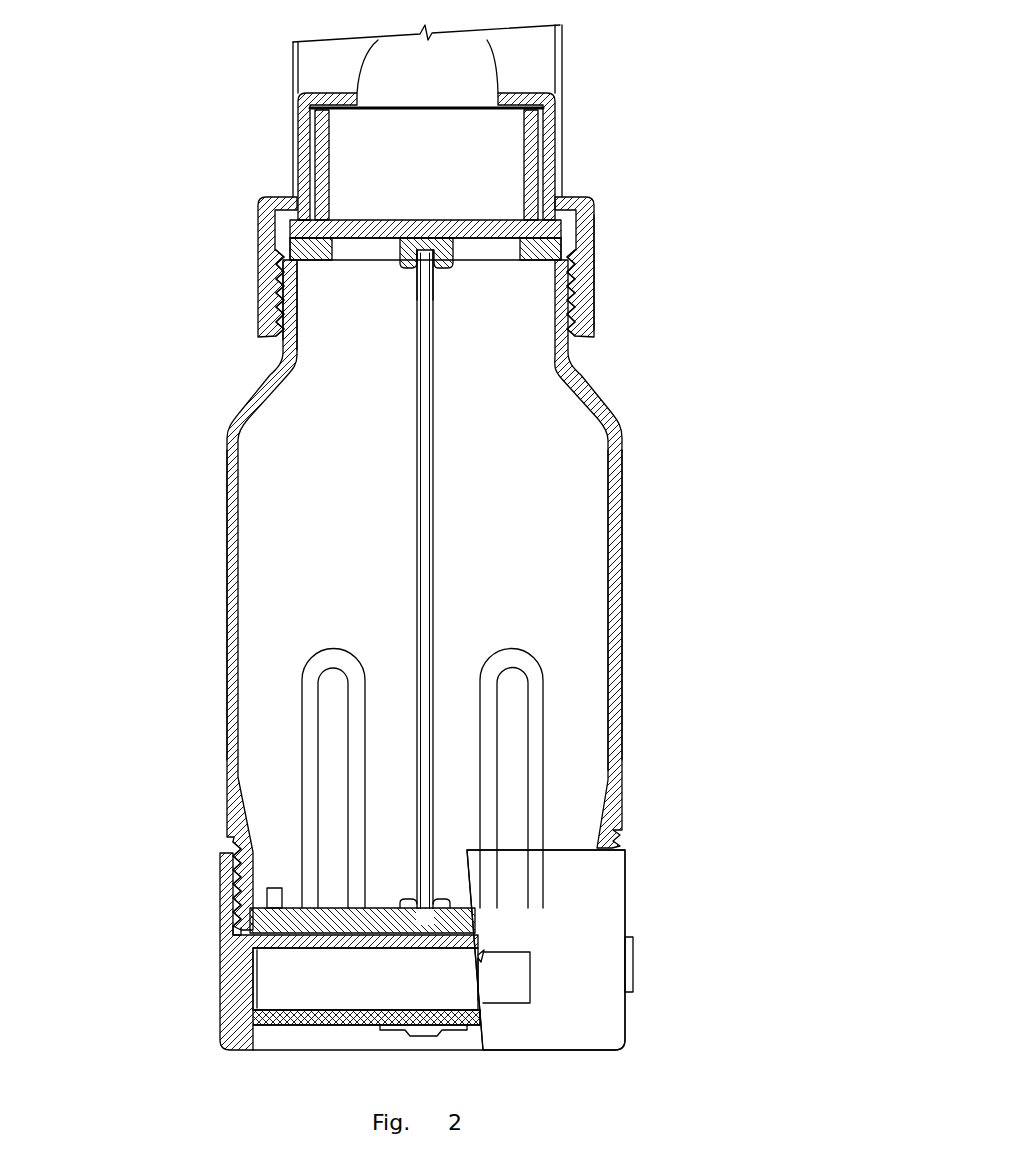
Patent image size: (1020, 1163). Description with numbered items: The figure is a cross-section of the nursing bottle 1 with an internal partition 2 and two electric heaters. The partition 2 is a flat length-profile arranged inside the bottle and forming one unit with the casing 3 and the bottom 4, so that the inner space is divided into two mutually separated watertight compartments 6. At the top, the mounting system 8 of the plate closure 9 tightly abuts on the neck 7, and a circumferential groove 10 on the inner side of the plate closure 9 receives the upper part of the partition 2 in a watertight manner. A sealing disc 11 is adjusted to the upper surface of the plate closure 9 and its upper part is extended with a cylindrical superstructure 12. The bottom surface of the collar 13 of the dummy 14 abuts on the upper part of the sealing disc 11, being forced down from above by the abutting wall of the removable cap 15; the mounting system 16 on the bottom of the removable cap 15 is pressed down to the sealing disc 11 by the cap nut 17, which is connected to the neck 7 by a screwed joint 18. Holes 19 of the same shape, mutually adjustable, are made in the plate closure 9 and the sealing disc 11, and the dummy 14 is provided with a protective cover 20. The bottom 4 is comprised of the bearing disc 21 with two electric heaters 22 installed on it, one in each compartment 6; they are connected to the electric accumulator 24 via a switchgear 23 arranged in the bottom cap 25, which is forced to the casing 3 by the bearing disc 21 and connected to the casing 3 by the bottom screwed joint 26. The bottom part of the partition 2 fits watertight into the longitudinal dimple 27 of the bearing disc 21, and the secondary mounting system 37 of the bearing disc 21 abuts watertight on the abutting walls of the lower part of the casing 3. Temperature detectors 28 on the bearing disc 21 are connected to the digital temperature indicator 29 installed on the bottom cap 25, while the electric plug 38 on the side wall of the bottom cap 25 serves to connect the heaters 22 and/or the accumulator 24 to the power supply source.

The nursing bottle 1 is at (623, 460).
The partition 2 is at (432, 568).
The casing 3 is at (623, 673).
The bottom 4 is at (470, 893).
The compartment 6 is at (275, 508).
The neck 7 is at (260, 230).
The mounting system 8 is at (273, 275).
The plate closure 9 is at (306, 265).
The circumferential groove 10 is at (427, 263).
The sealing disc 11 is at (326, 185).
The cylindrical superstructure 12 is at (320, 153).
The collar 13 is at (332, 112).
The dummy 14 is at (493, 58).
The removable cap 15 is at (550, 135).
The mounting system 16 is at (595, 230).
The cap nut 17 is at (595, 273).
The screwed joint 18 is at (595, 307).
The holes 19 is at (488, 230).
The protective cover 20 is at (565, 80).
The bearing disc 21 is at (402, 907).
The electric heaters 22 is at (327, 650).
The switchgear 23 is at (400, 1035).
The electric accumulator 24 is at (280, 973).
The bottom cap 25 is at (625, 1030).
The bottom screwed joint 26 is at (223, 868).
The longitudinal dimple 27 is at (443, 902).
The temperature detectors 28 is at (277, 888).
The digital temperature indicator 29 is at (513, 972).
The secondary mounting system 37 is at (223, 908).
The electric plug 38 is at (635, 967).